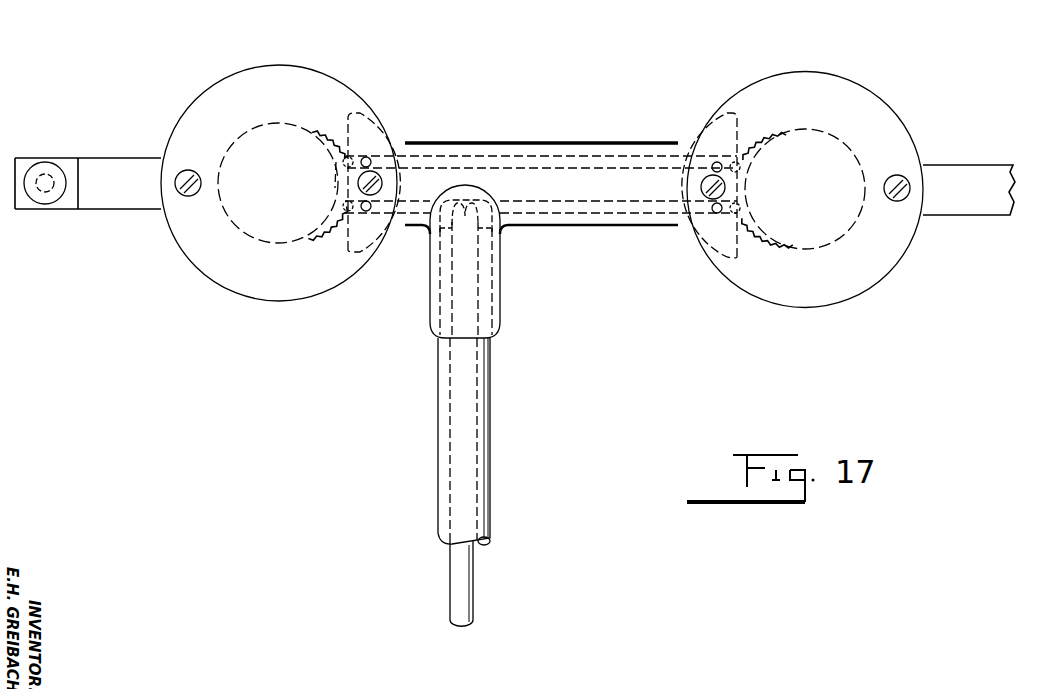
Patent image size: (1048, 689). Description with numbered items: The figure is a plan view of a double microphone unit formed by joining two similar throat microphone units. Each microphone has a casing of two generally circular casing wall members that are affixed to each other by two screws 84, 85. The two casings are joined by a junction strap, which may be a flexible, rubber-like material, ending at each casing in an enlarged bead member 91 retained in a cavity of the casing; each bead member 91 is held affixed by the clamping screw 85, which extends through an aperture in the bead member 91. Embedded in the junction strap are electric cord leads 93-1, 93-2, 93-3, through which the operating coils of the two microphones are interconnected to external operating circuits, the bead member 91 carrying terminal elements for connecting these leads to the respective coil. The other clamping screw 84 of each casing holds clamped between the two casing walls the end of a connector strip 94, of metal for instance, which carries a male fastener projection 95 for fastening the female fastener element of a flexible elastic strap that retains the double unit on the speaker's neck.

The clamping screw 84 is at (183, 172).
The clamping screw 85 is at (380, 173).
The bead member 91 is at (363, 115).
The electric cord lead 93-1 is at (400, 228).
The electric cord lead 93-2 is at (537, 205).
The electric cord lead 93-3 is at (535, 165).
The connector strip 94 is at (128, 158).
The male fastener projection 95 is at (41, 177).